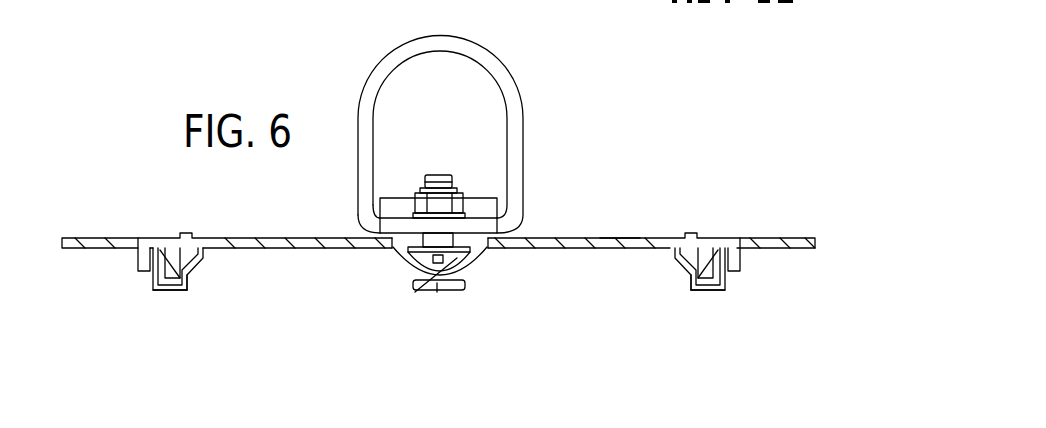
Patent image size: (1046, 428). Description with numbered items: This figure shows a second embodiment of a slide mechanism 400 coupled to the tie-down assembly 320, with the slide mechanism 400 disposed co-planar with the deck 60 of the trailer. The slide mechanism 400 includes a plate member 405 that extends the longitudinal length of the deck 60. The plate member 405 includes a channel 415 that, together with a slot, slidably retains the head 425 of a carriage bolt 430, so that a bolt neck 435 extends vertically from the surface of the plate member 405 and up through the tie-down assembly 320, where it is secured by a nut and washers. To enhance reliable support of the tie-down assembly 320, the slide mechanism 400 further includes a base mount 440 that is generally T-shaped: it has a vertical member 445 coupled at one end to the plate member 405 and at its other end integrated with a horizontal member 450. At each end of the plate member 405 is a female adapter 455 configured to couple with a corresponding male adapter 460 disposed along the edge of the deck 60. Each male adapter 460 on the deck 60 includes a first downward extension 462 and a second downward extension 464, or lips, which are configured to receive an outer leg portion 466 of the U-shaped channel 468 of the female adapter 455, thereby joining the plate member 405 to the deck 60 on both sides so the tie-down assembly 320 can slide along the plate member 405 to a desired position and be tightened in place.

The deck 60 is at (96, 229).
The tie-down assembly 320 is at (497, 30).
The slide mechanism 400 is at (502, 272).
The plate member 405 is at (615, 239).
The channel 415 is at (466, 238).
The head 425 is at (453, 262).
The carriage bolt 430 is at (452, 163).
The bolt neck 435 is at (424, 184).
The base mount 440 is at (422, 305).
The vertical member 445 is at (420, 278).
The horizontal member 450 is at (437, 283).
The female adapter 455 is at (171, 304).
The male adapter 460 is at (128, 265).
The first downward extension 462 is at (152, 243).
The second downward extension 464 is at (169, 242).
The outer leg portion 466 is at (151, 279).
The U-shaped channel 468 is at (189, 283).